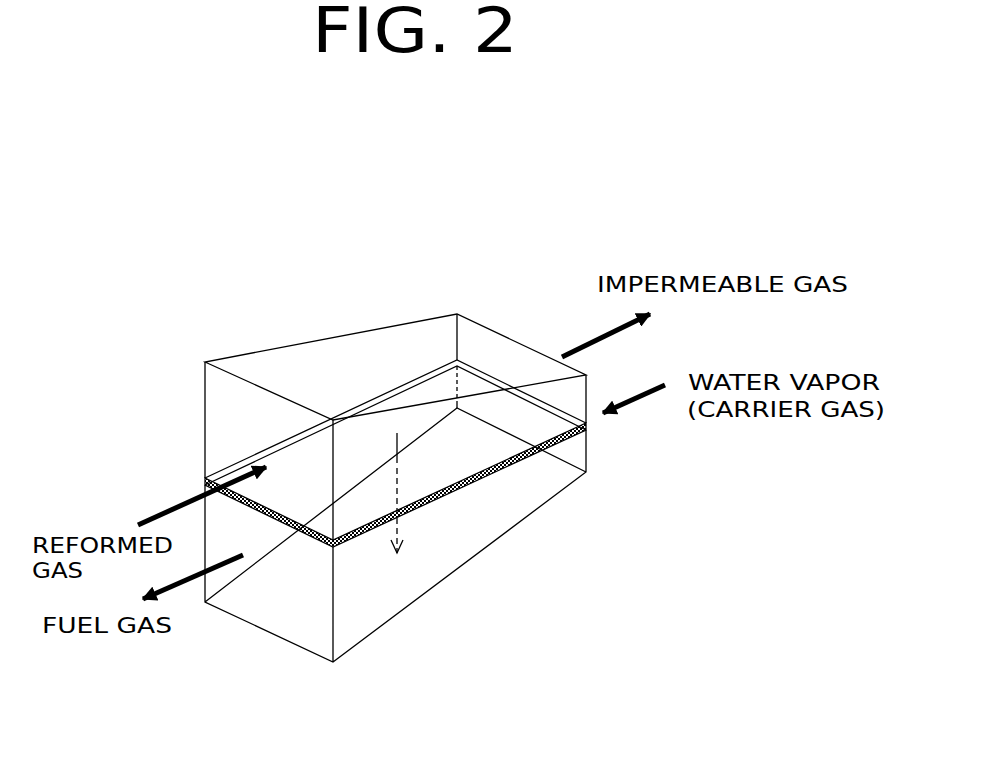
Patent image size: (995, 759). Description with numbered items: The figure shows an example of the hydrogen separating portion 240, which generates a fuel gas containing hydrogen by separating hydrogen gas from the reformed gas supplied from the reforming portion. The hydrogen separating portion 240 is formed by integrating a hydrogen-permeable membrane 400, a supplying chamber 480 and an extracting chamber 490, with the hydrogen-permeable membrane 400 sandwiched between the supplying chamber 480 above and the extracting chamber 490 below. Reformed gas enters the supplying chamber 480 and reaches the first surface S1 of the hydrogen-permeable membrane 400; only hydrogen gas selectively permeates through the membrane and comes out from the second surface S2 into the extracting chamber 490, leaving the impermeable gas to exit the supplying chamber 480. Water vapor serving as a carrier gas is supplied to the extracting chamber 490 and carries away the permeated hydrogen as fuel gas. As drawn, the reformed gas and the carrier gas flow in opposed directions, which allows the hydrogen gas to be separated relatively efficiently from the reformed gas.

The hydrogen separating portion 240 is at (397, 433).
The supplying chamber 480 is at (248, 352).
The extracting chamber 490 is at (455, 573).
The hydrogen-permeable membrane 400 is at (460, 490).
The first surface S1 is at (503, 453).
The second surface S2 is at (483, 480).